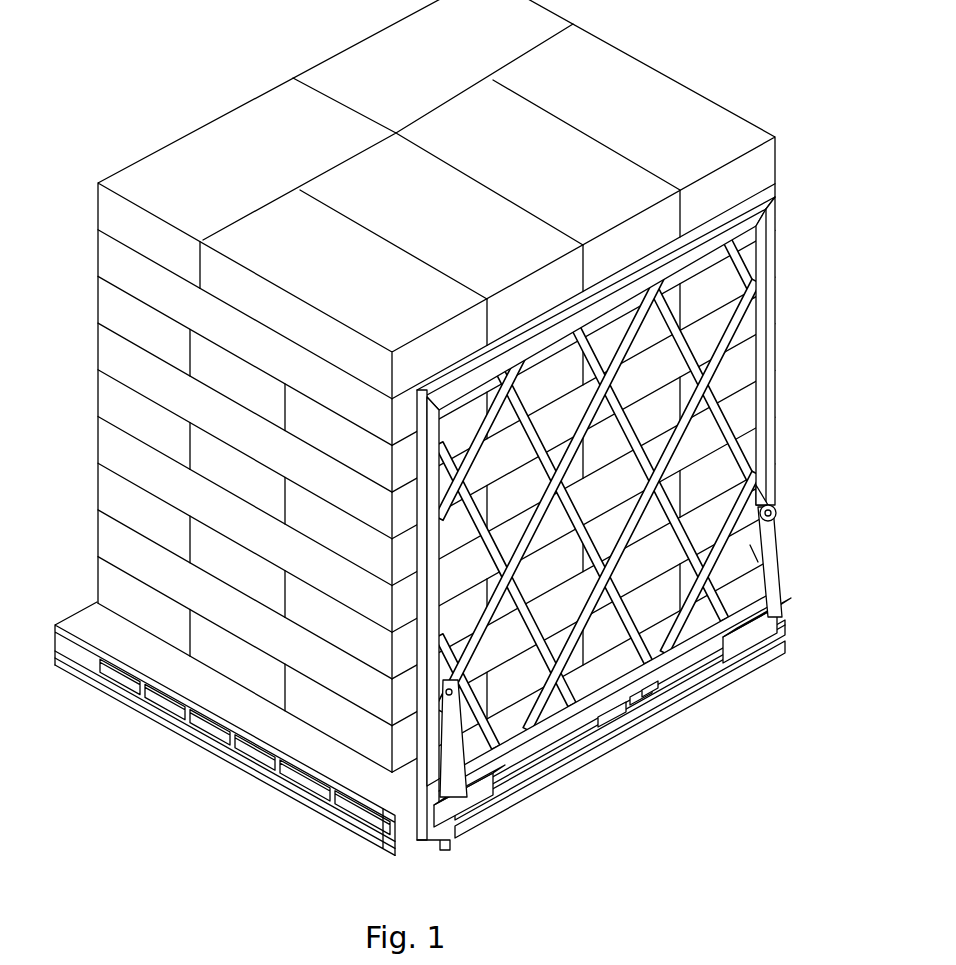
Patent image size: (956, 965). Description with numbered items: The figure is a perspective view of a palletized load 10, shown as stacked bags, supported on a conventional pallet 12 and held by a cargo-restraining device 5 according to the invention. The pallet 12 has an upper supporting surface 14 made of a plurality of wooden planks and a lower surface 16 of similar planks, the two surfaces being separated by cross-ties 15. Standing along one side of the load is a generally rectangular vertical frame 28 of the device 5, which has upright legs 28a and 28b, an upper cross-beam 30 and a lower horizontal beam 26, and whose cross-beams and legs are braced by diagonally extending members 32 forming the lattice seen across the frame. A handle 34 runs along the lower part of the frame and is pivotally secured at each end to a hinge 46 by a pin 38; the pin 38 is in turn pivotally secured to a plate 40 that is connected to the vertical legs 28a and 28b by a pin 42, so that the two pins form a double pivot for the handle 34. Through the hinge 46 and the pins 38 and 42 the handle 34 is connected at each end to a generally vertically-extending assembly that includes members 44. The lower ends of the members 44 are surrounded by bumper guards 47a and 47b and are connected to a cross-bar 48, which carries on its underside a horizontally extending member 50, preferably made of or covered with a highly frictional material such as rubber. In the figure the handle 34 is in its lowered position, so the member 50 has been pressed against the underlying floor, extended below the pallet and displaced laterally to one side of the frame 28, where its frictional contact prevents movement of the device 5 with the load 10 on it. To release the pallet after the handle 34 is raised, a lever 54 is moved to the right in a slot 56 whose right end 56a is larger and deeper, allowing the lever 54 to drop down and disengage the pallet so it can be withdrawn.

The cargo-restraining device 5 is at (588, 533).
The palletized load 10 is at (640, 78).
The pallet 12 is at (80, 652).
The upper supporting surface 14 is at (110, 663).
The cross-ties 15 is at (290, 775).
The lower surface 16 is at (152, 720).
The lower horizontal beam 26 is at (445, 833).
The vertical frame 28 is at (588, 505).
The upright leg 28a is at (776, 238).
The upright leg 28b is at (425, 418).
The upper cross-beam 30 is at (720, 218).
The diagonally extending members 32 is at (622, 366).
The handle 34 is at (643, 672).
The pin 38 is at (777, 527).
The plate 40 is at (760, 492).
The pin 42 is at (774, 508).
The members 44 is at (753, 553).
The hinge 46 is at (440, 748).
The bumper guard 47a is at (770, 643).
The bumper guard 47b is at (477, 810).
The cross-bar 48 is at (552, 788).
The horizontally extending member 50 is at (520, 813).
The lever 54 is at (613, 723).
The slot 56 is at (630, 710).
The right end of slot 56a is at (652, 703).